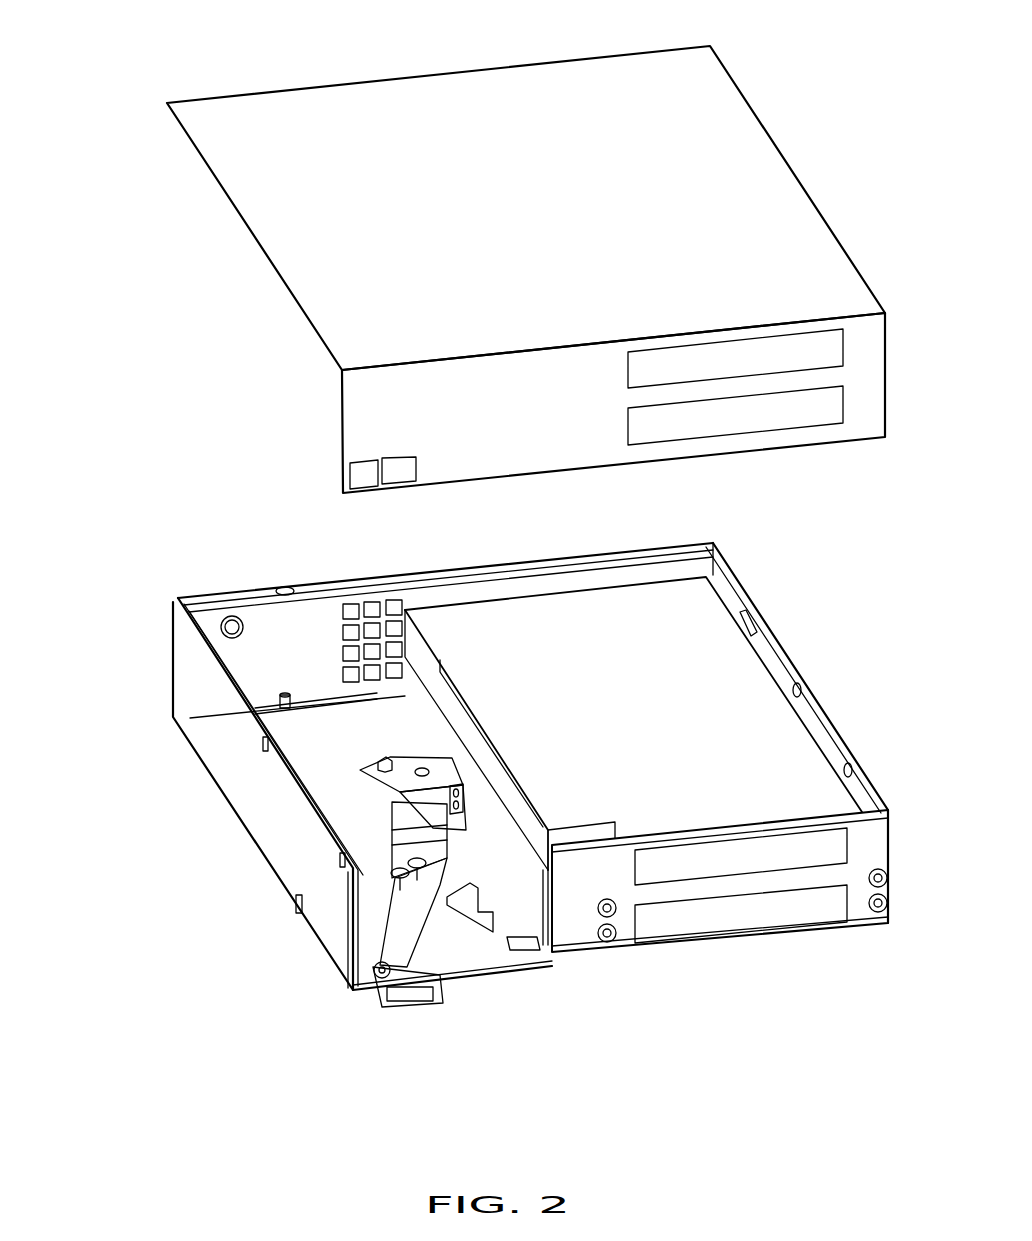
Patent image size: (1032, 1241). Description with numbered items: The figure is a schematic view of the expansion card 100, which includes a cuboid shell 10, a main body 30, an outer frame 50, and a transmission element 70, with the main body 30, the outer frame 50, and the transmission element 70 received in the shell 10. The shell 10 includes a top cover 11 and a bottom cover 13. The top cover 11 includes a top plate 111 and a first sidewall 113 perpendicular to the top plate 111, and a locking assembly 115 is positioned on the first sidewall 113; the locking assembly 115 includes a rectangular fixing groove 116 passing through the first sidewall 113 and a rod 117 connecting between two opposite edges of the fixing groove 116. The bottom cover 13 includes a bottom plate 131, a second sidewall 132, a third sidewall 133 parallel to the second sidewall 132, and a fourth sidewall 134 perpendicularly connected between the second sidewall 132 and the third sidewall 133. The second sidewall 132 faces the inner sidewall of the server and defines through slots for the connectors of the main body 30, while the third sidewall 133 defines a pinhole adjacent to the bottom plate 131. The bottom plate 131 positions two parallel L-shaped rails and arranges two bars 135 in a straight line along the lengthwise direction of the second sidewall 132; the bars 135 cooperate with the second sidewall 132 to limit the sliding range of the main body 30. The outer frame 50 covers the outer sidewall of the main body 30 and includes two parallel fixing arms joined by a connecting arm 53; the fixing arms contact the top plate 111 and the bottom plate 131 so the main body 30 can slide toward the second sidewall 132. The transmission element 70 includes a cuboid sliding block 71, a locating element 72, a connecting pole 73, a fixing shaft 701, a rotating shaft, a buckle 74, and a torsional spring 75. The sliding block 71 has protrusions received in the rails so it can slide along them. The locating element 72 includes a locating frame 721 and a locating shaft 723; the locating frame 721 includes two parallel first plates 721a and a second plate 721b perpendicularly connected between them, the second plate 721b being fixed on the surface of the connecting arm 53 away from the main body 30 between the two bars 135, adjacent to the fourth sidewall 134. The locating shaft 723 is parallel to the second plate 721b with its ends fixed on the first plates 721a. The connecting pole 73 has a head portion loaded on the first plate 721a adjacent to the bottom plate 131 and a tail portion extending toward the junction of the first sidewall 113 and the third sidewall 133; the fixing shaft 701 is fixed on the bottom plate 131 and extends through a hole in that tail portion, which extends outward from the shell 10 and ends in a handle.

The expansion card 100 is at (368, 52).
The shell 10 is at (218, 410).
The top cover 11 is at (257, 375).
The top plate 111 is at (343, 348).
The first sidewall 113 is at (363, 422).
The locking assembly 115 is at (497, 493).
The fixing groove 116 is at (402, 472).
The rod 117 is at (380, 480).
The bottom cover 13 is at (322, 620).
The bottom plate 131 is at (520, 965).
The second sidewall 132 is at (788, 652).
The third sidewall 133 is at (217, 718).
The fourth sidewall 134 is at (693, 550).
The bars 135 is at (462, 940).
The main body 30 is at (698, 638).
The outer frame 50 is at (587, 940).
The connecting arm 53 is at (405, 705).
The transmission element 70 is at (282, 1090).
The sliding block 71 is at (393, 935).
The locating element 72 is at (165, 937).
The locating frame 721 is at (198, 893).
The first plates 721a is at (450, 792).
The second plate 721b is at (452, 806).
The locating shaft 723 is at (462, 782).
The connecting pole 73 is at (420, 950).
The buckle 74 is at (400, 1003).
The torsional spring 75 is at (415, 982).
The fixing shaft 701 is at (455, 960).